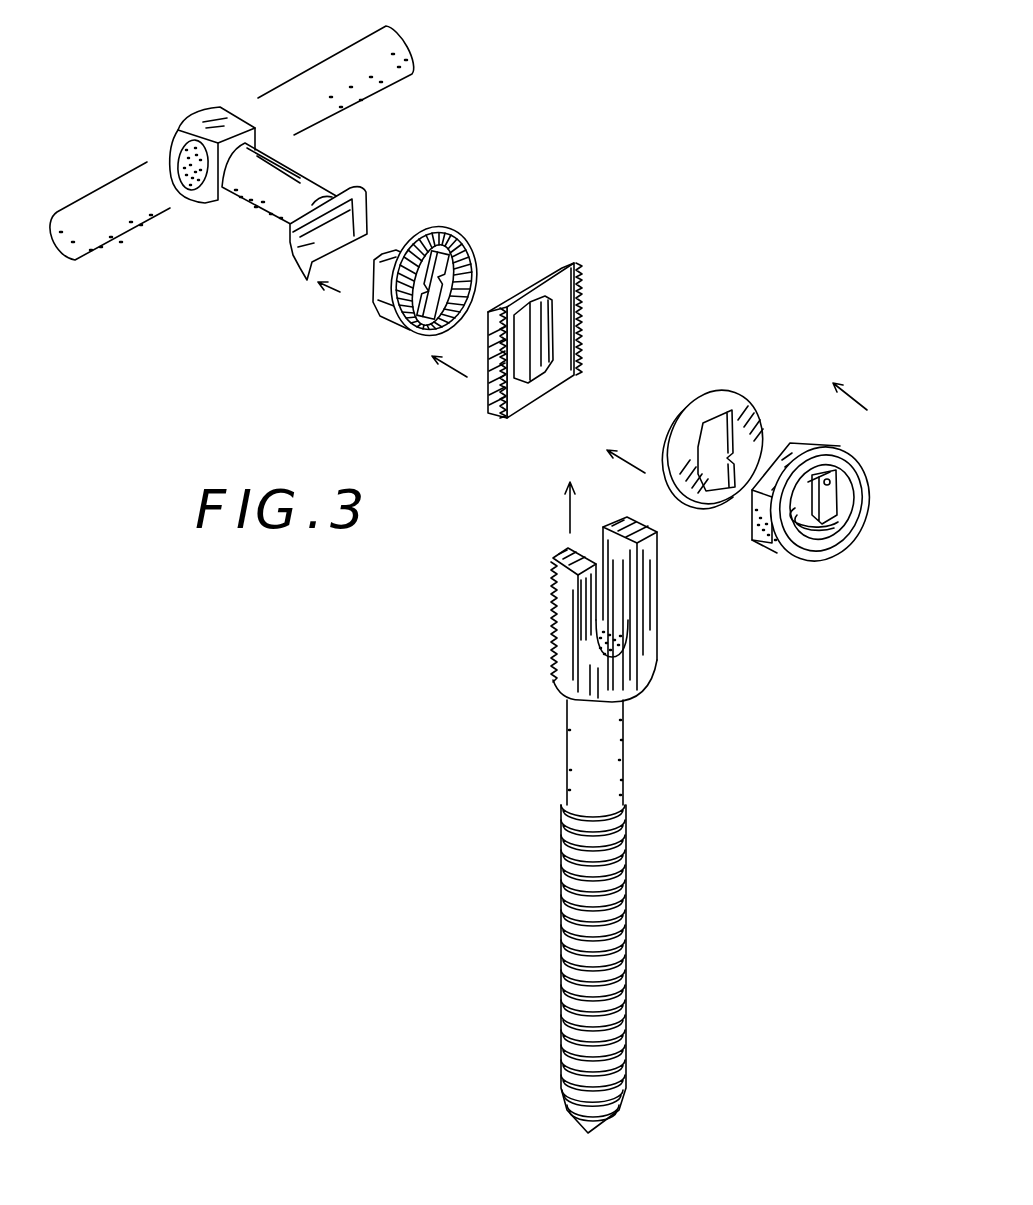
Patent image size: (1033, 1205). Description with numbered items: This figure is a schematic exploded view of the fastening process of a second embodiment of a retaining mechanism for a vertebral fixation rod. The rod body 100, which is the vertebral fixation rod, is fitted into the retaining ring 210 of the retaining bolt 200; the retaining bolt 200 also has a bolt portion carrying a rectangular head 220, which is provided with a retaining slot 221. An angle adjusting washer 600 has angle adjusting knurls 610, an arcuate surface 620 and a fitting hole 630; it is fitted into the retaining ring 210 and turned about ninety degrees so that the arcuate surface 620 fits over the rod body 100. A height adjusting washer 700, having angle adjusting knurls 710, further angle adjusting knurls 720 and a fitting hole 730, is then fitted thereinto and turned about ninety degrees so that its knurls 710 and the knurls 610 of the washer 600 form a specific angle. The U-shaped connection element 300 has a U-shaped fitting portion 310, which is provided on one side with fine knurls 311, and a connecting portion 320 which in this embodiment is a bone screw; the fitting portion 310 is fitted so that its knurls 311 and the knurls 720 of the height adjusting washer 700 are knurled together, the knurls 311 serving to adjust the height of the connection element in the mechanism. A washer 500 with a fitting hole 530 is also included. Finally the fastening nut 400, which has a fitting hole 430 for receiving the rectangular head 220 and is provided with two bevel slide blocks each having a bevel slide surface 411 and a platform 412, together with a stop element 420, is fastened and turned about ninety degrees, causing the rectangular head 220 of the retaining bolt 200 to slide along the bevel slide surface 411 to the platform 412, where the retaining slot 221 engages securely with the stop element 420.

The rod body 100 is at (420, 58).
The retaining bolt 200 is at (465, 122).
The retaining ring 210 is at (222, 133).
The rectangular head 220 is at (365, 194).
The retaining slot 221 is at (476, 183).
The U-shaped connection element 300 is at (447, 643).
The U-shaped fitting portion 310 is at (597, 683).
The fine knurls 311 is at (548, 641).
The connecting portion 320 is at (570, 913).
The fastening nut 400 is at (915, 463).
The bevel slide surface 411 is at (837, 502).
The platform 412 is at (840, 482).
The stop element 420 is at (787, 557).
The fitting hole 430 is at (802, 515).
The washer 500 is at (737, 407).
The fitting hole 530 is at (710, 453).
The angle adjusting washer 600 is at (540, 172).
The angle adjusting knurls 610 is at (465, 265).
The arcuate surface 620 is at (325, 282).
The fitting hole 630 is at (430, 250).
The height adjusting washer 700 is at (660, 210).
The angle adjusting knurls 710 is at (450, 328).
The angle adjusting knurls 720 is at (584, 340).
The fitting hole 730 is at (527, 322).